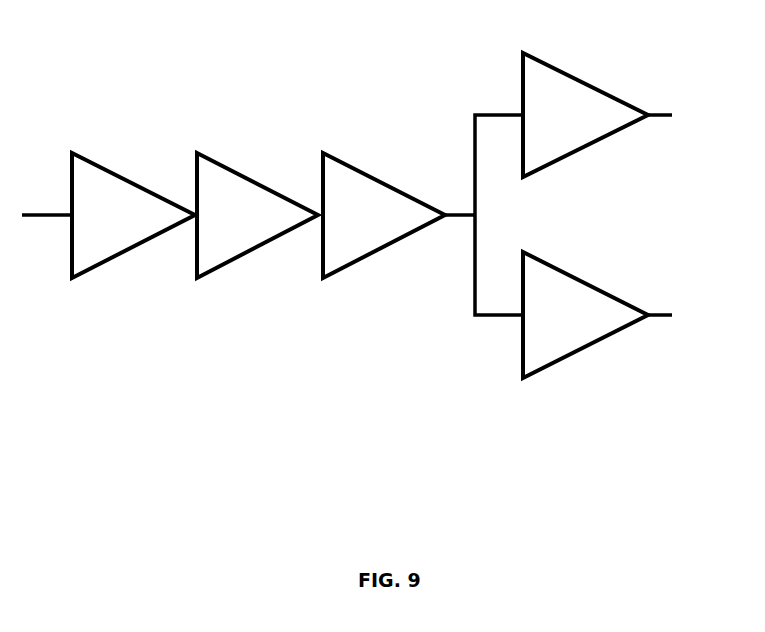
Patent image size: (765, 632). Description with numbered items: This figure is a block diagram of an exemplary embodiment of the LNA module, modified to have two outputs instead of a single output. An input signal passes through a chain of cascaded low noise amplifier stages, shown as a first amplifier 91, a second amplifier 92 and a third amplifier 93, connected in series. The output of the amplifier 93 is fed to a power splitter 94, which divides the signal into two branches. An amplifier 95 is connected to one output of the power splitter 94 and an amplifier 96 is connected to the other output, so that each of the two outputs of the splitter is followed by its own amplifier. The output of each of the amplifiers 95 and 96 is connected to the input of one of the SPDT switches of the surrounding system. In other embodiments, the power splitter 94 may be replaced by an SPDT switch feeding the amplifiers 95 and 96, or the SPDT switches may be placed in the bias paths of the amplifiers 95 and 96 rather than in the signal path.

The first low noise amplifier LNA1 91 is at (122, 163).
The second low noise amplifier LNA2 92 is at (254, 178).
The amplifier 93 is at (367, 168).
The splitting node 94 is at (460, 165).
The amplifier 95 is at (623, 100).
The amplifier 96 is at (578, 278).